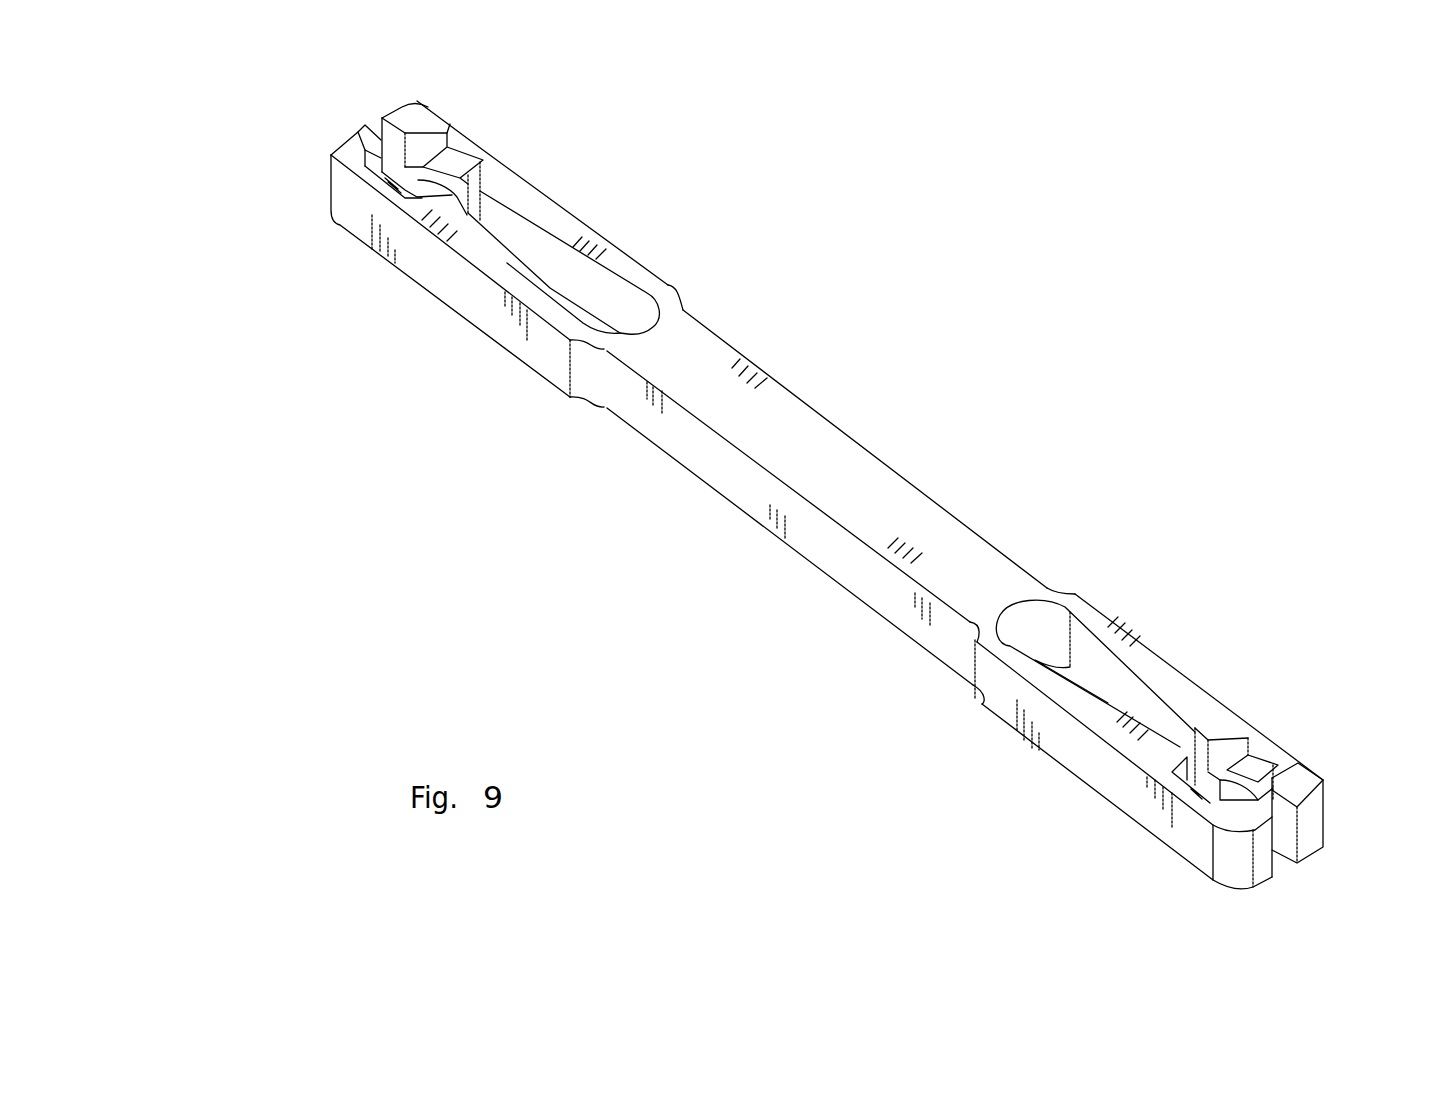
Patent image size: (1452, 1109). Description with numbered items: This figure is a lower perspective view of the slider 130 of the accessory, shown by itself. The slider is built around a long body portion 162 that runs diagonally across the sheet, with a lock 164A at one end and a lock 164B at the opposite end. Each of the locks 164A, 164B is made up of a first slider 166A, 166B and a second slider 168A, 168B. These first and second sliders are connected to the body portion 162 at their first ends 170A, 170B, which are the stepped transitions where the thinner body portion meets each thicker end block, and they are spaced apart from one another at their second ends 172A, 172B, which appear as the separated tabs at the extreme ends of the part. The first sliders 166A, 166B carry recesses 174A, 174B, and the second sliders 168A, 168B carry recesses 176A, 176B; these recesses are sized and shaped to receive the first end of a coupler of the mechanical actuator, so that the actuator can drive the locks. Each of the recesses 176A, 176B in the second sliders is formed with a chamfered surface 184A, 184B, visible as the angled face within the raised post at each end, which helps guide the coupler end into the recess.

The slider 130 is at (1044, 266).
The body portion 162 is at (987, 437).
The lock 164A is at (1092, 873).
The lock 164B is at (248, 297).
The first slider 166A is at (1012, 743).
The first slider 166B is at (410, 318).
The second slider 168A is at (1187, 642).
The second slider 168B is at (617, 215).
The first end 170A is at (942, 694).
The first end 170B is at (585, 435).
The second end 172A is at (1328, 865).
The second end 172B is at (300, 197).
The recess 174A is at (1165, 763).
The recess 174B is at (362, 154).
The recess 176A is at (1233, 743).
The recess 176B is at (430, 140).
The chamfered surface 184A is at (1258, 773).
The chamfered surface 184B is at (458, 168).